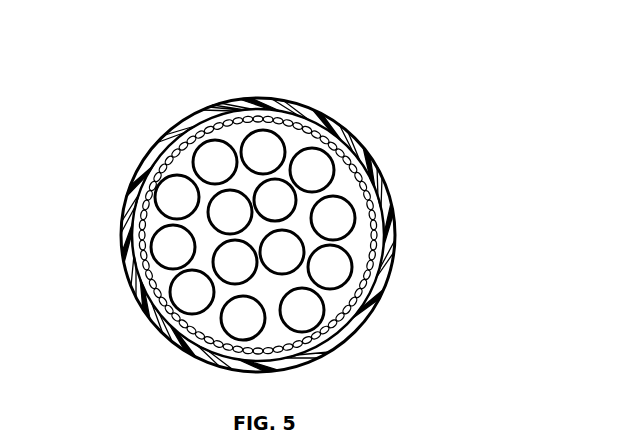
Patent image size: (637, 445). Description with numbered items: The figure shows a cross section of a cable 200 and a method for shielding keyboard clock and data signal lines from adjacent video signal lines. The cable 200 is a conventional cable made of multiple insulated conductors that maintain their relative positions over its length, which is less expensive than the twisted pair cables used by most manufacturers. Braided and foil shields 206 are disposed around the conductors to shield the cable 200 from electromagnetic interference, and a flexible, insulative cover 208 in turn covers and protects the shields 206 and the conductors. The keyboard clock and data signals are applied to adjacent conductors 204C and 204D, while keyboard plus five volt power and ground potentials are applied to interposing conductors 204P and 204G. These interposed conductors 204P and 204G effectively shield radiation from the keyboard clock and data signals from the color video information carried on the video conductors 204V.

The cable 200 is at (285, 216).
The flexible insulative cover 208 is at (316, 110).
The braided and foil shields 206 is at (377, 258).
The ground conductor 204G is at (183, 160).
The clock conductor 204C is at (288, 122).
The data conductor 204D is at (337, 169).
The power conductor 204P is at (357, 217).
The video conductors 204V is at (170, 270).